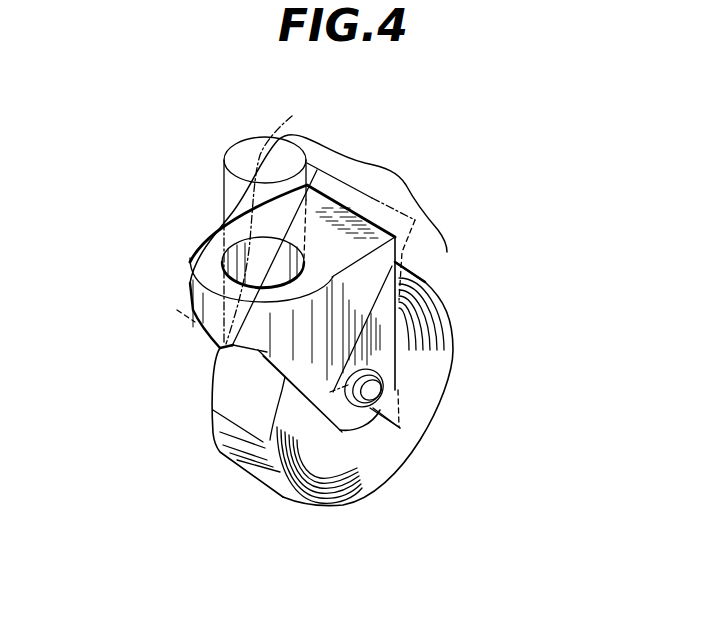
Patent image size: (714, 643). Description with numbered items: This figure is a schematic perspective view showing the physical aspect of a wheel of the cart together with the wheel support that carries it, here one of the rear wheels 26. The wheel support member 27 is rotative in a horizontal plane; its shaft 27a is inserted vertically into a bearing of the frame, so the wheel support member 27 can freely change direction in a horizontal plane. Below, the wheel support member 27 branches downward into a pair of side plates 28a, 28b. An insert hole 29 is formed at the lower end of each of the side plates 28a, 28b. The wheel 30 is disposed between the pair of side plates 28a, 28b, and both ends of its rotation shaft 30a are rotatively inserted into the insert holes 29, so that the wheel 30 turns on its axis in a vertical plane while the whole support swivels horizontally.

The rear wheel 26 is at (250, 492).
The wheel support member 27 is at (176, 218).
The shaft 27a is at (303, 101).
The side plate 28a is at (215, 345).
The side plate 28b is at (368, 303).
The insert hole 29 is at (373, 408).
The wheel 30 is at (453, 337).
The rotation shaft 30a is at (373, 394).